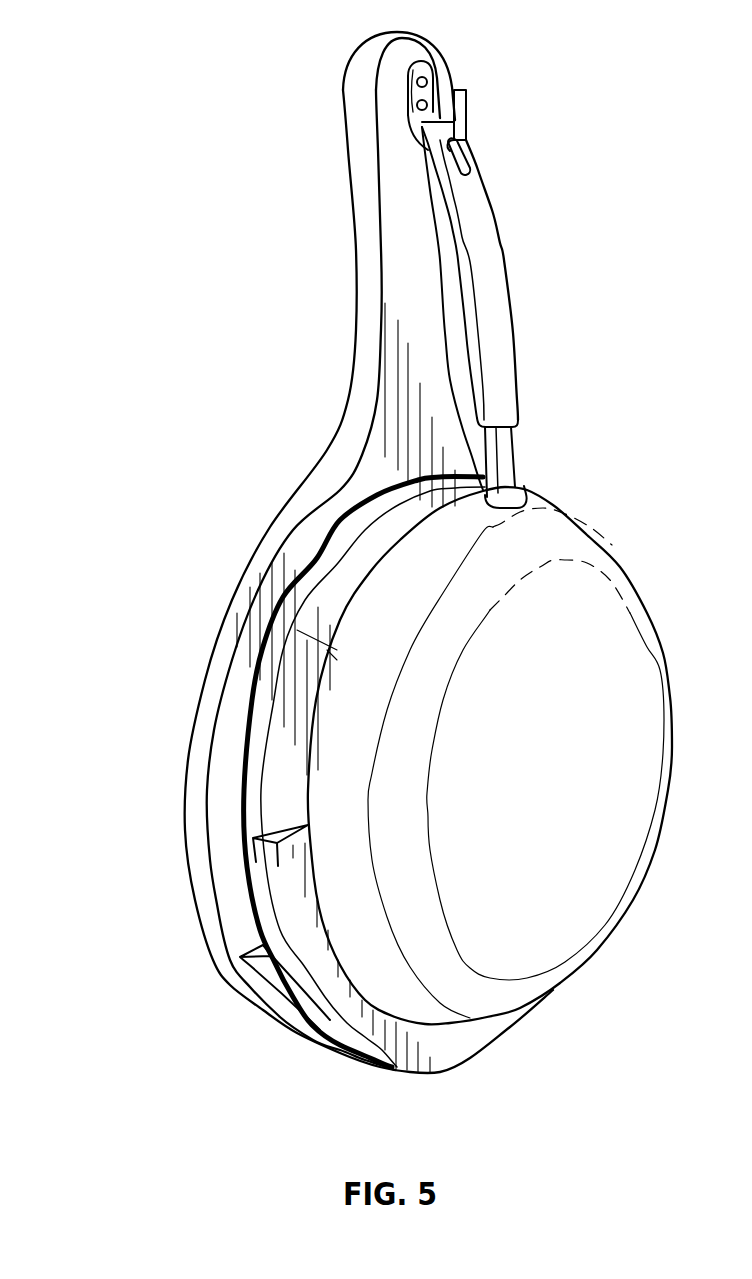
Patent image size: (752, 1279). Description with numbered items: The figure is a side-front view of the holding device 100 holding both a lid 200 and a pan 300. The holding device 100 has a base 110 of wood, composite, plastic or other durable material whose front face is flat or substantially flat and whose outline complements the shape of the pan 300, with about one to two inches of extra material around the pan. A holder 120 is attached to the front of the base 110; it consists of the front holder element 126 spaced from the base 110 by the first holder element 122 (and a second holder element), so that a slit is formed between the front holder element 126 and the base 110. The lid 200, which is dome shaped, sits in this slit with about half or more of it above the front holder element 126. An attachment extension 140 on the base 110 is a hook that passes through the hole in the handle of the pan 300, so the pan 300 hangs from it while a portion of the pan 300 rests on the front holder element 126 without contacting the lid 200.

The holding device 100 is at (343, 245).
The base 110 is at (362, 470).
The holder 120 is at (295, 892).
The first holder element 122 is at (272, 974).
The front holder element 126 is at (287, 850).
The attachment extension 140 is at (416, 90).
The lid 200 is at (318, 558).
The pan 300 is at (360, 928).